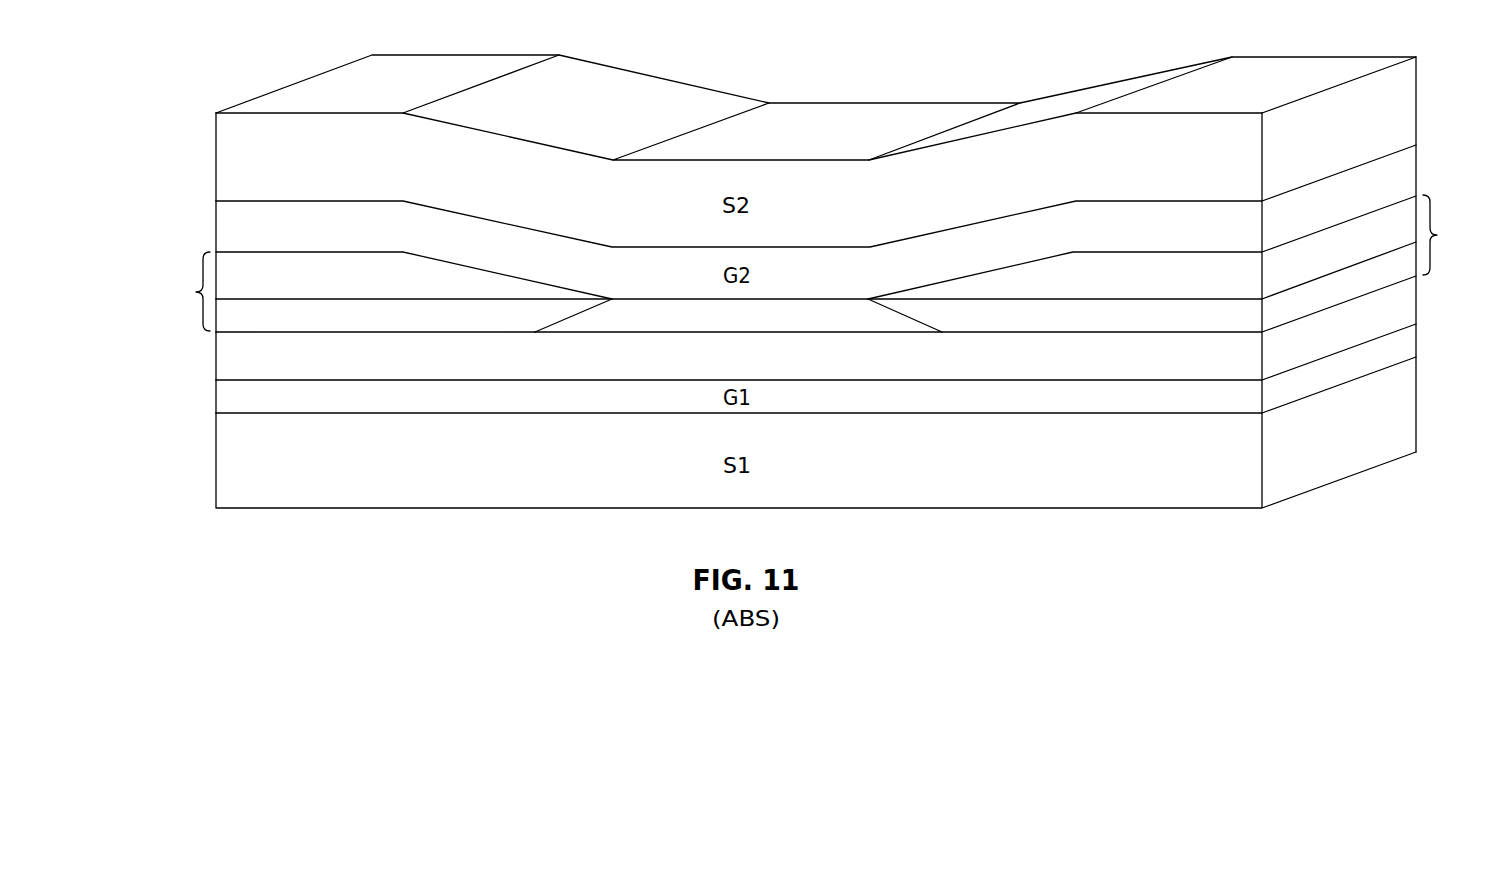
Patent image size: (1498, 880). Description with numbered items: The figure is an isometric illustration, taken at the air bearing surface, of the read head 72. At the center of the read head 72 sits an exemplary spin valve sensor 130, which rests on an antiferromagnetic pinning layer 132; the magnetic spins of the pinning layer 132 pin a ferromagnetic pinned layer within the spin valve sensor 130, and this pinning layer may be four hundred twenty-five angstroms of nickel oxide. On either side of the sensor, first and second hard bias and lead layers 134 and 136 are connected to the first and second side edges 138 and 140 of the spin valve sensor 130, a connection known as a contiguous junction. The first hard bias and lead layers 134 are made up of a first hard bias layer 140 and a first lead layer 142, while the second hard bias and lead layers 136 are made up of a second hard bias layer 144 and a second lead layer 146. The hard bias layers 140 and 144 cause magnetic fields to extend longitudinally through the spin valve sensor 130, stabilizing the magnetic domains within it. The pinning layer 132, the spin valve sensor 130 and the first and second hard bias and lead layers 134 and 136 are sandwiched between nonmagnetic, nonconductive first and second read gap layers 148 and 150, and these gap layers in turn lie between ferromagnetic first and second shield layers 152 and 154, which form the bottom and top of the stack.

The read head 72 is at (890, 75).
The spin valve sensor 130 is at (647, 298).
The antiferromagnetic pinning layer 132 is at (938, 362).
The first hard bias and lead layers 134 is at (173, 291).
The second hard bias and lead layers 136 is at (1457, 235).
The first side edge 138 is at (558, 322).
The first hard bias layer 140 is at (262, 317).
The first lead layer 142 is at (260, 265).
The second hard bias layer 144 is at (1208, 318).
The second lead layer 146 is at (1208, 267).
The first read gap layer 148 is at (510, 402).
The second read gap layer 150 is at (470, 232).
The first shield layer 152 is at (393, 487).
The second shield layer 154 is at (668, 92).